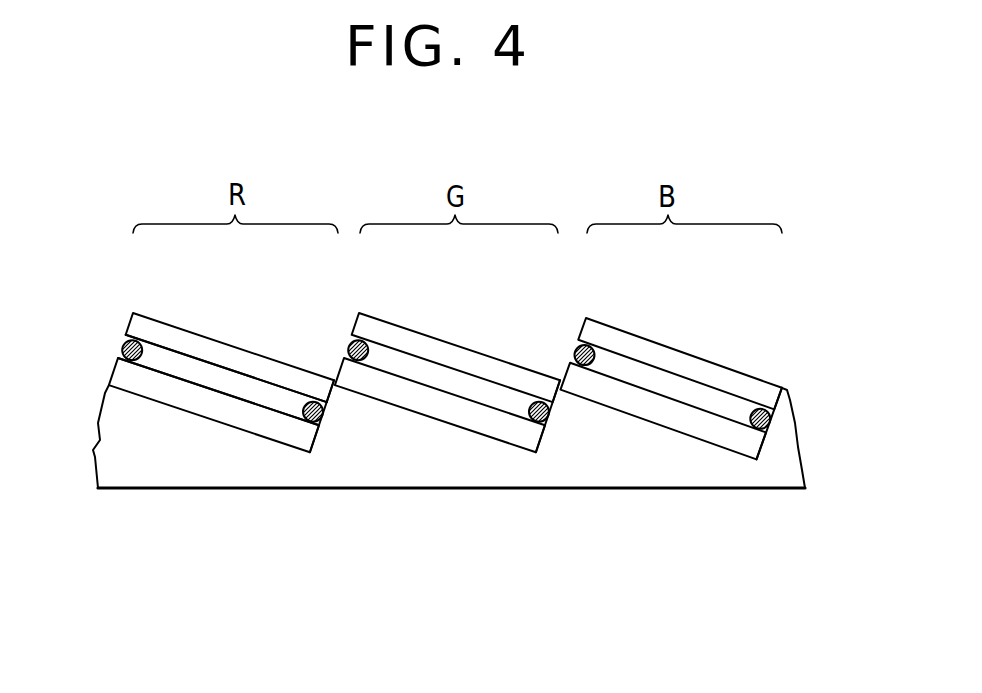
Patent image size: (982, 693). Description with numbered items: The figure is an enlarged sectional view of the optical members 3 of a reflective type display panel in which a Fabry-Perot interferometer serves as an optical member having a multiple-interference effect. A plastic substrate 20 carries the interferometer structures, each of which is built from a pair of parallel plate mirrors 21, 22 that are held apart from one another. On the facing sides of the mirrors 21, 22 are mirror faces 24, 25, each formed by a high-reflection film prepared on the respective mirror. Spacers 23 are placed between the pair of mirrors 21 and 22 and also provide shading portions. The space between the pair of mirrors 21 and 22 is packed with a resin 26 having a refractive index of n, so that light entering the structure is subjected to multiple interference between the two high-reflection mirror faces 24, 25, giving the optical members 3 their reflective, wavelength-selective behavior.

The optical members 3 is at (858, 323).
The plastic substrate 20 is at (167, 468).
The parallel plate mirror 21 is at (120, 373).
The parallel plate mirror 22 is at (138, 325).
The spacer 23 is at (121, 346).
The mirror face 24 is at (275, 413).
The mirror face 25 is at (275, 388).
The resin 26 is at (220, 380).